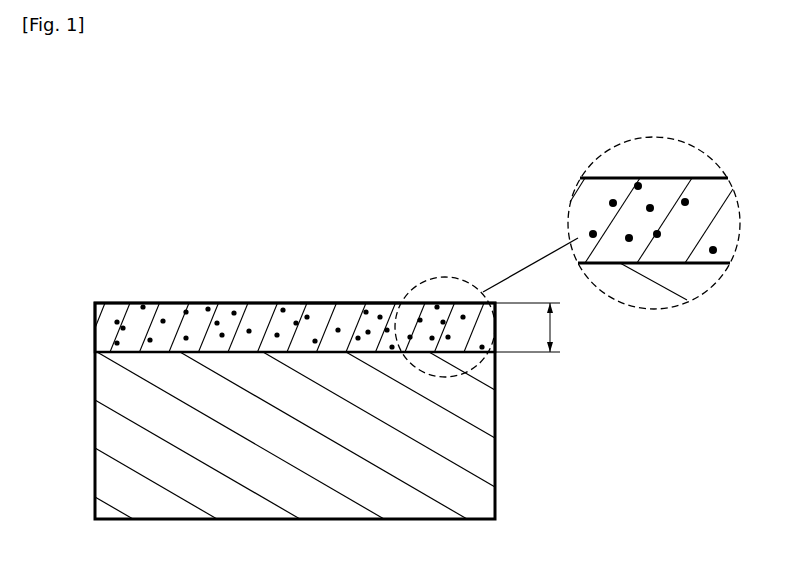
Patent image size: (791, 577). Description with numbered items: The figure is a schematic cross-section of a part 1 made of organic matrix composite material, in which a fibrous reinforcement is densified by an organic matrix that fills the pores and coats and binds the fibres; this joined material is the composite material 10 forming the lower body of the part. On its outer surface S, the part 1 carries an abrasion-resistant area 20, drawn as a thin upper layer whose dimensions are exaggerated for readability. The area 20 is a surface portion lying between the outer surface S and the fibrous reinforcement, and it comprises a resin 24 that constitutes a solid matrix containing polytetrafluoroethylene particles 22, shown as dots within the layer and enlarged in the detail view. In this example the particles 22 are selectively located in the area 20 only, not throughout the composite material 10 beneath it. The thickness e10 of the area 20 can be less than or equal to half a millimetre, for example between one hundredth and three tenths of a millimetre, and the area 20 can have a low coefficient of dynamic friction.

The part 1 is at (105, 228).
The organic matrix composite material 10 is at (110, 433).
The abrasion-resistant area 20 is at (98, 328).
The polytetrafluoroethylene particles 22 is at (613, 200).
The resin 24 is at (703, 195).
The outer surface S is at (337, 302).
The thickness of the area e10 is at (545, 327).